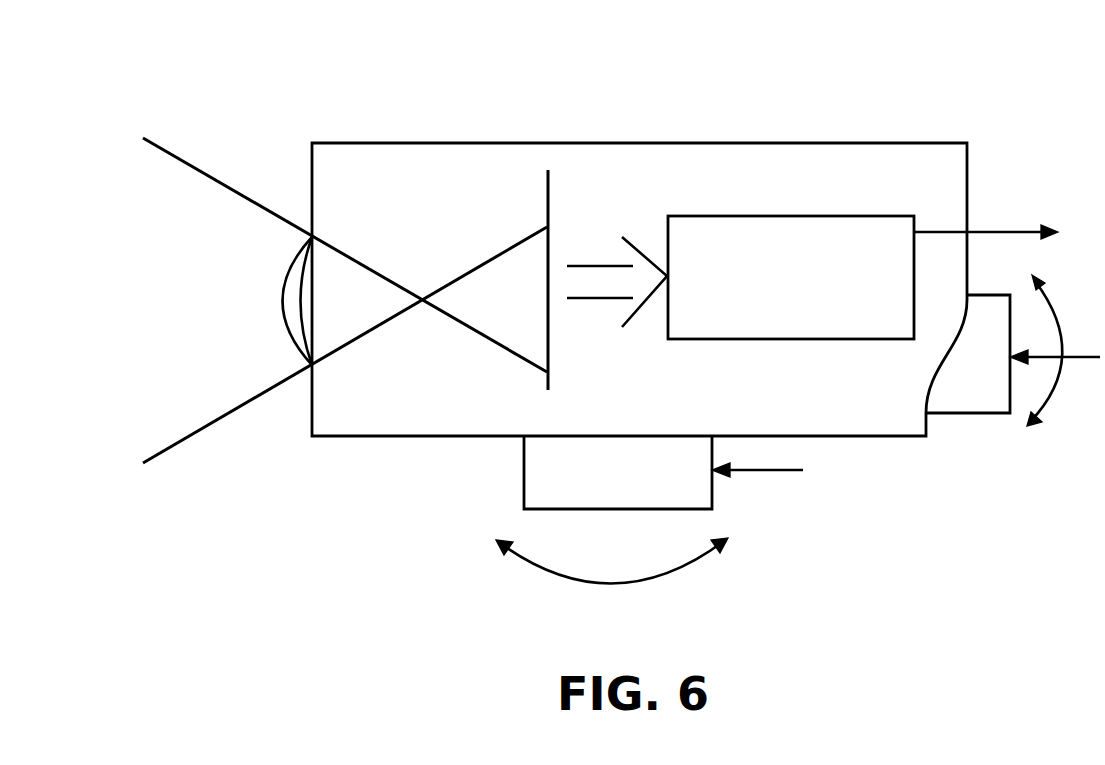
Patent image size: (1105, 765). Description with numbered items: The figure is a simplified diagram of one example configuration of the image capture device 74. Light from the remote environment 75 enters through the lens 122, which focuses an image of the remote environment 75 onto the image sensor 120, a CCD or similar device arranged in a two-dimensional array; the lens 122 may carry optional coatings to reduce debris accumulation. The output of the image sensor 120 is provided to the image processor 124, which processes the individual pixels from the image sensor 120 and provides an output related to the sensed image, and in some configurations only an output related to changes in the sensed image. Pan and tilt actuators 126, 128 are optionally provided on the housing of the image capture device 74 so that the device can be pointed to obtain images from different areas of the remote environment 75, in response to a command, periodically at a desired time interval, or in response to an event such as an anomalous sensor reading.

The image capture device 74 is at (602, 143).
The remote environment 75 is at (132, 305).
The image sensor 120 is at (548, 237).
The lens 122 is at (282, 320).
The image processor 124 is at (734, 312).
The pan actuator 126 is at (538, 476).
The tilt actuator 128 is at (968, 396).